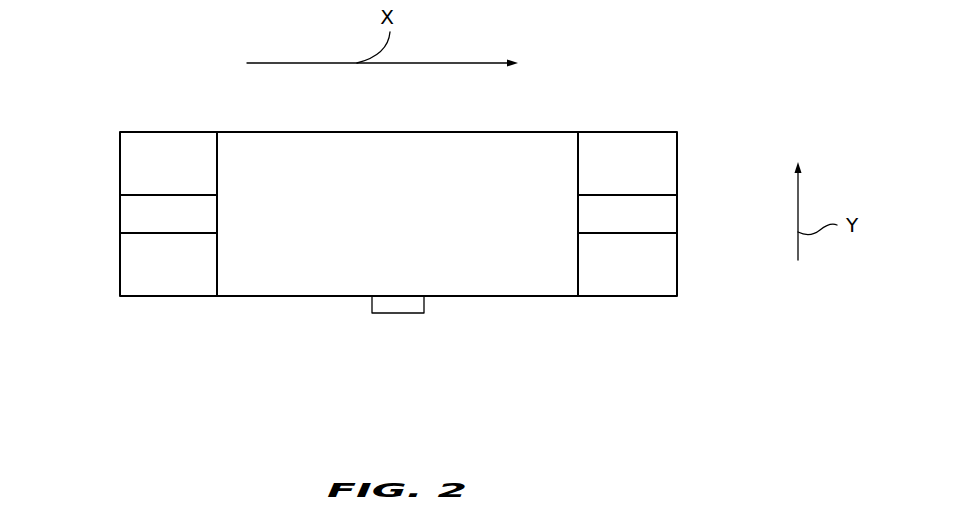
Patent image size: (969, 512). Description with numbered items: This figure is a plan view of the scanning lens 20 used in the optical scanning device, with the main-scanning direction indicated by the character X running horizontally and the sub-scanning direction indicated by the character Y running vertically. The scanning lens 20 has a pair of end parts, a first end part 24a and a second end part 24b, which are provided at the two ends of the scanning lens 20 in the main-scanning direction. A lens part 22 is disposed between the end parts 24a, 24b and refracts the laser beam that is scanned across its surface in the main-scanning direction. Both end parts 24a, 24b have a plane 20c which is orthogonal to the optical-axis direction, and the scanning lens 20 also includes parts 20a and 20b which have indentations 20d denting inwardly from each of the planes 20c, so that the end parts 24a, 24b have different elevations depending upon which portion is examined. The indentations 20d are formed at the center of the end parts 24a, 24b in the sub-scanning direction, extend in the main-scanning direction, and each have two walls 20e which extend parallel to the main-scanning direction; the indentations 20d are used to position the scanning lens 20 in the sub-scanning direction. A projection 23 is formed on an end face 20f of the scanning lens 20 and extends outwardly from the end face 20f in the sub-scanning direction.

The scanning lens 20 is at (556, 390).
The part of scanning lens 20a is at (648, 213).
The part of scanning lens 20b is at (138, 227).
The plane 20c is at (162, 142).
The indentation 20d is at (138, 207).
The wall 20e is at (158, 195).
The end face 20f is at (528, 297).
The lens part 22 is at (525, 145).
The projection 23 is at (382, 310).
The first end part 24a is at (644, 305).
The second end part 24b is at (175, 318).